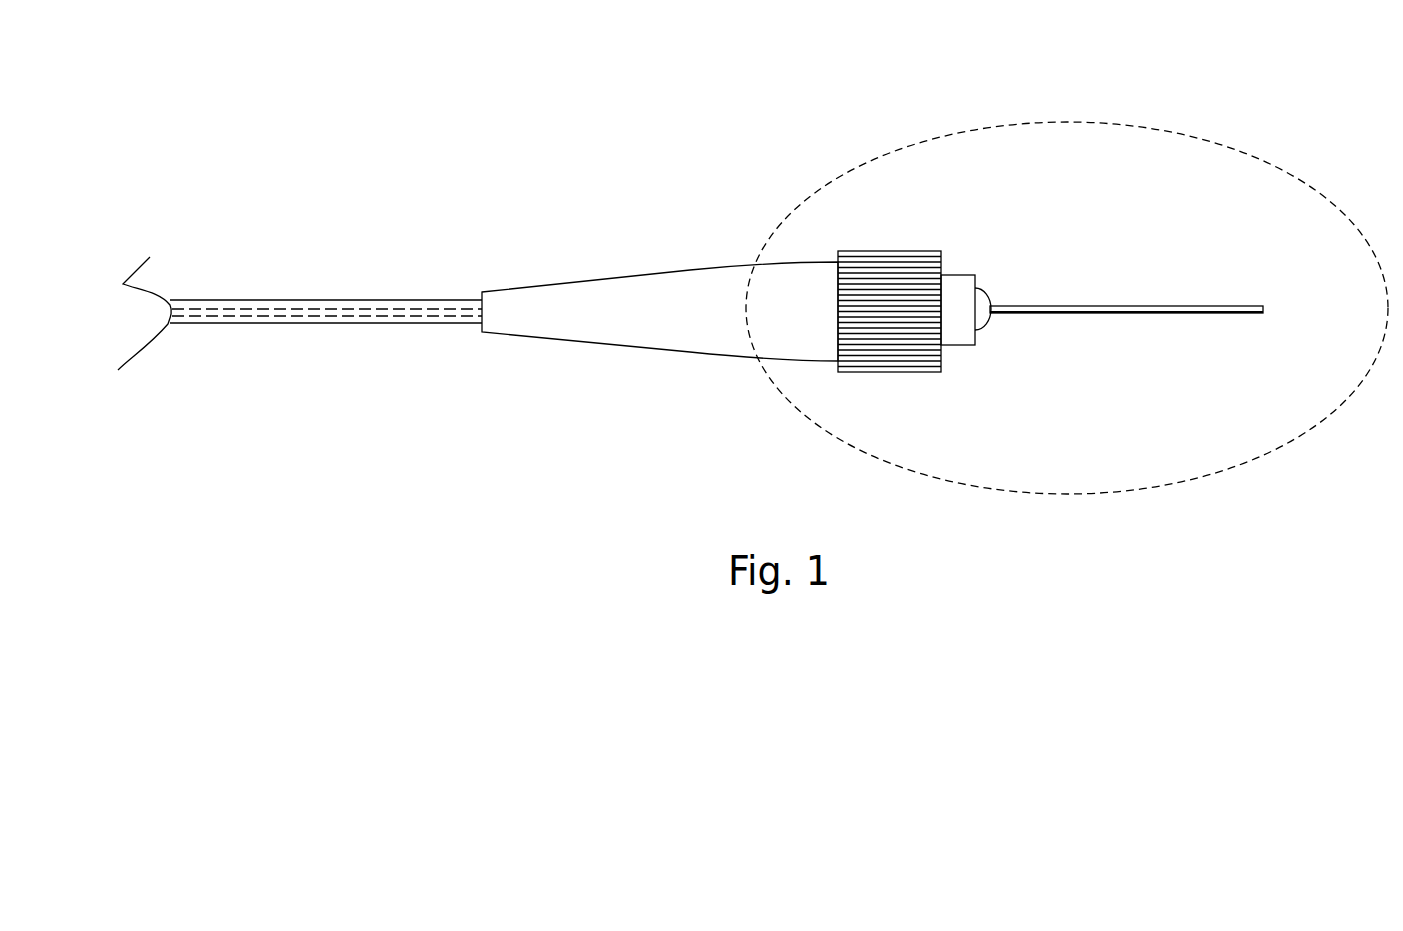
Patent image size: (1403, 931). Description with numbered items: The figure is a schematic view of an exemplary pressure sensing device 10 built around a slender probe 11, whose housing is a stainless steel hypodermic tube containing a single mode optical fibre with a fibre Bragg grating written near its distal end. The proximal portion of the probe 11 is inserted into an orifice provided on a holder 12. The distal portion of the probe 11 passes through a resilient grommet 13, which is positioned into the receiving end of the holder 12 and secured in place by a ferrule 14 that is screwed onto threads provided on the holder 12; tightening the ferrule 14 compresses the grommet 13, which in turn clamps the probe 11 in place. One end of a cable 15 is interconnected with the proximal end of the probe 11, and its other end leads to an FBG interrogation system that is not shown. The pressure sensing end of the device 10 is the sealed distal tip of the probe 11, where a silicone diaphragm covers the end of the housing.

The pressure sensing device 10 is at (752, 137).
The probe 11 is at (1078, 305).
The holder 12 is at (686, 270).
The grommet 13 is at (983, 325).
The ferrule 14 is at (863, 251).
The cable 15 is at (262, 323).